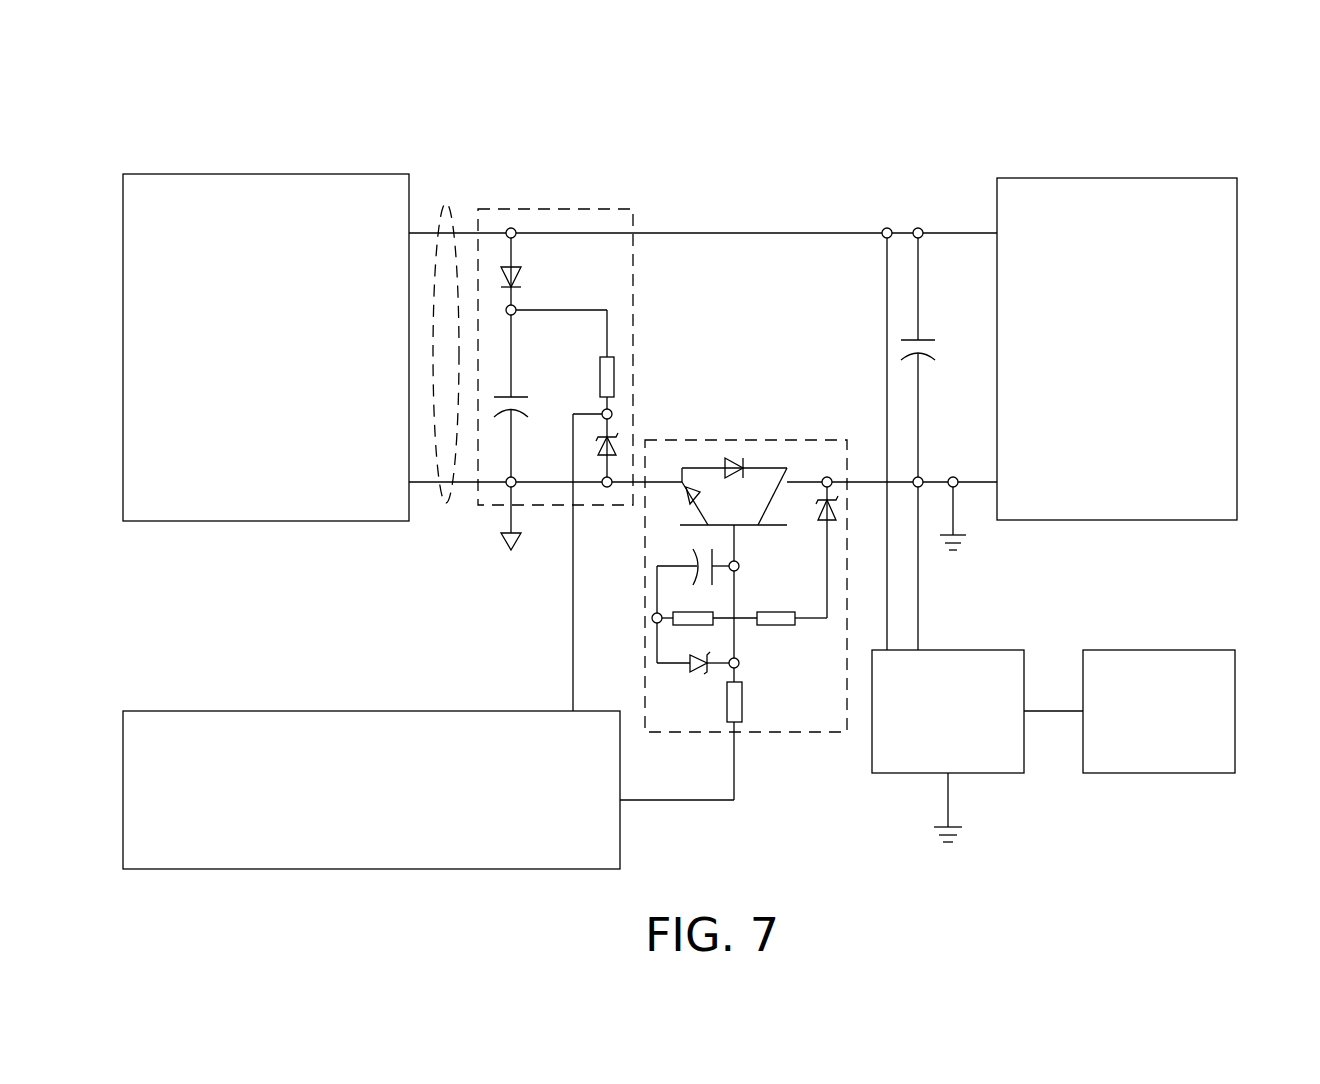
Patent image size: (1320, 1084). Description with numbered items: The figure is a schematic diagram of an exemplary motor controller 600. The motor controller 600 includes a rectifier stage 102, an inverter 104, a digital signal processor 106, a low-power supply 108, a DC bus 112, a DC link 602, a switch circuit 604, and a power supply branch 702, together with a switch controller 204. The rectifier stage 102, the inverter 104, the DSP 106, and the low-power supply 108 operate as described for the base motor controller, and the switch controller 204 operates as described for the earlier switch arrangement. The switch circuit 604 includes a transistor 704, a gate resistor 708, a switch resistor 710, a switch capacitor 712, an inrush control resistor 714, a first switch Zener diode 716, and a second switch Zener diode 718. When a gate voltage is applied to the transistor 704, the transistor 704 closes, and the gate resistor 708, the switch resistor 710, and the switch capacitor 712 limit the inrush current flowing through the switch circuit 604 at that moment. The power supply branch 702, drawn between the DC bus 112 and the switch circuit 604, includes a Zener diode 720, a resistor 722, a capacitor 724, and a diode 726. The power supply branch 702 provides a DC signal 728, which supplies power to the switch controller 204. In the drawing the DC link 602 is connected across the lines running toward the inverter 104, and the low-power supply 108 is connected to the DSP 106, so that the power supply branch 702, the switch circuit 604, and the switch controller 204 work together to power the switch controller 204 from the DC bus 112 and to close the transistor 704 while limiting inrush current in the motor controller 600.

The motor controller 600 is at (1192, 100).
The rectifier stage 102 is at (235, 358).
The inverter 104 is at (1081, 350).
The digital signal processor 106 is at (1129, 719).
The low-power supply 108 is at (921, 712).
The switch controller 204 is at (315, 813).
The DC bus 112 is at (445, 202).
The power supply branch 702 is at (549, 209).
The diode 726 is at (523, 267).
The resistor 722 is at (599, 355).
The capacitor 724 is at (522, 397).
The Zener diode 720 is at (610, 447).
The DC signal 728 is at (573, 643).
The switch circuit 604 is at (775, 440).
The transistor 704 is at (733, 525).
The second switch Zener diode 718 is at (830, 479).
The switch capacitor 712 is at (696, 556).
The switch resistor 710 is at (680, 625).
The inrush control resistor 714 is at (775, 630).
The first switch Zener diode 716 is at (708, 655).
The gate resistor 708 is at (745, 708).
The DC link 602 is at (925, 338).